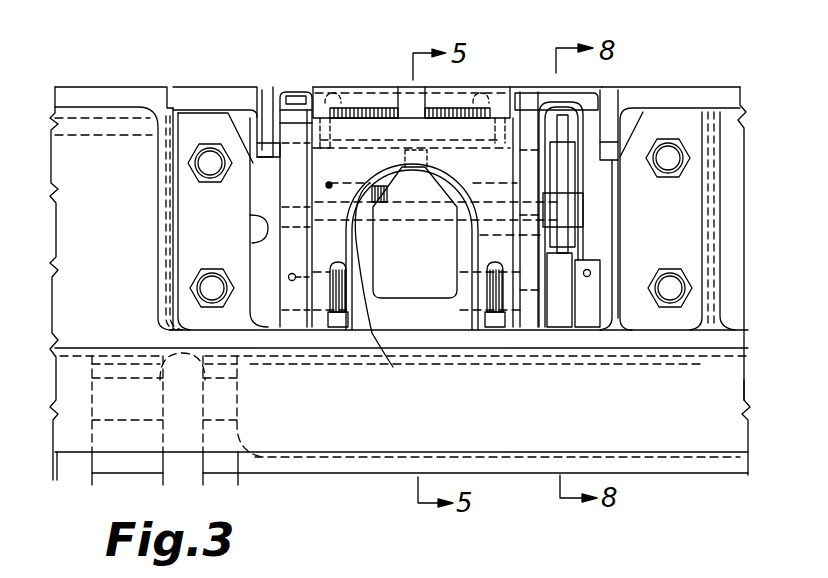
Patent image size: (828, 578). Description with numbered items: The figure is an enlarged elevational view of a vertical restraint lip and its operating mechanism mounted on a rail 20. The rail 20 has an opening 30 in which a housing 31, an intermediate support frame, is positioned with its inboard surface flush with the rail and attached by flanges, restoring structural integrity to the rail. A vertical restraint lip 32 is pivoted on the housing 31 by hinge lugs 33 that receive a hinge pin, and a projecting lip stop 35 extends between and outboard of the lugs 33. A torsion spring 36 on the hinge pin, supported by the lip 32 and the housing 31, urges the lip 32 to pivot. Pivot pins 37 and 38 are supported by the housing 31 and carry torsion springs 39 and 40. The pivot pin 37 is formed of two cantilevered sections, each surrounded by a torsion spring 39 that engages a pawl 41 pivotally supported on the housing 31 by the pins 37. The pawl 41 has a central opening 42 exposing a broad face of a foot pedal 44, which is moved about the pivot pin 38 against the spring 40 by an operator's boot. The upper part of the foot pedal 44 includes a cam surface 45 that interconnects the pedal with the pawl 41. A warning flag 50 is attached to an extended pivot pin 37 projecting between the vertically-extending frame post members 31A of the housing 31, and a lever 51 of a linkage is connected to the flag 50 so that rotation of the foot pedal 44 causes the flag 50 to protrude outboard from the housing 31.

The rail 20 is at (103, 85).
The vertical restraint lip 32 is at (217, 90).
The lip stop 35 is at (357, 95).
The cam surface 45 is at (461, 102).
The torsion spring 36 is at (373, 118).
The torsion spring 40 is at (370, 183).
The hinge lugs 33 is at (310, 157).
The pawl 41 is at (507, 184).
The housing 31 is at (292, 178).
The pivot pin 38 is at (280, 212).
The opening 30 is at (252, 245).
The pivot pin 37 is at (280, 300).
The foot pedal 44 is at (436, 268).
The lever 51 is at (598, 188).
The warning flag 50 is at (565, 255).
The torsion spring 39 is at (340, 313).
The central opening 42 is at (388, 287).
The frame post members 31A is at (537, 320).